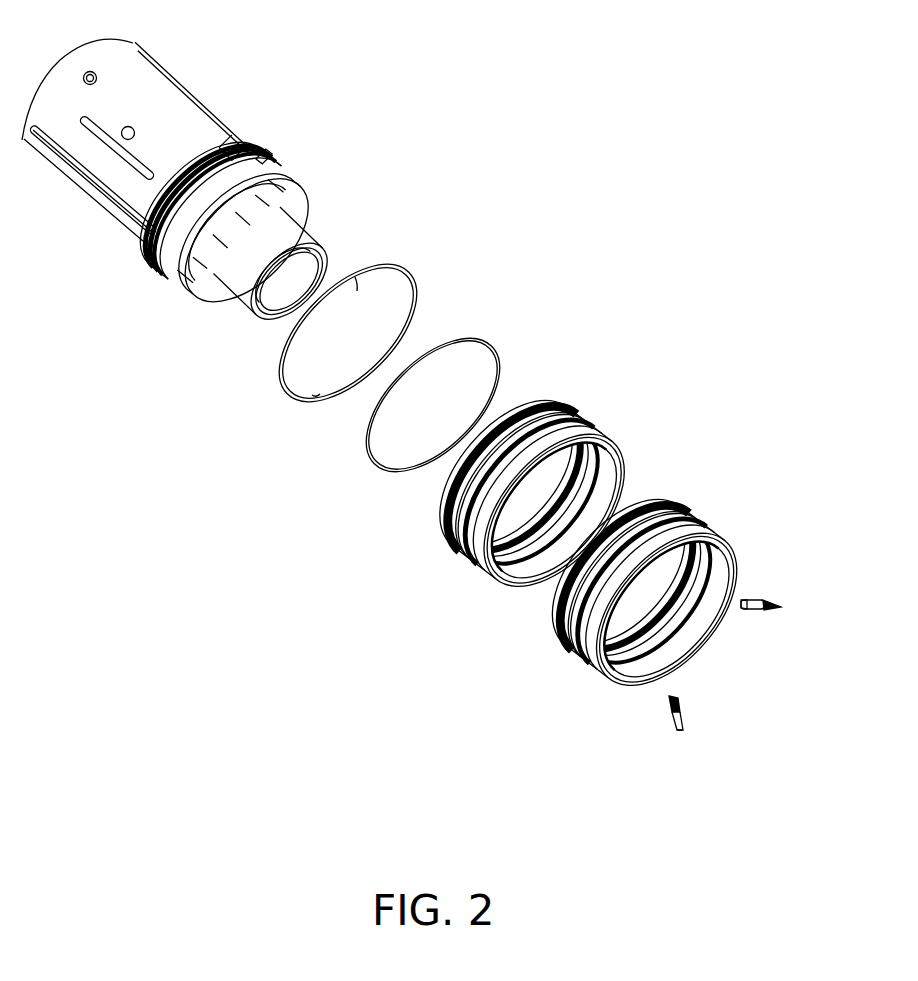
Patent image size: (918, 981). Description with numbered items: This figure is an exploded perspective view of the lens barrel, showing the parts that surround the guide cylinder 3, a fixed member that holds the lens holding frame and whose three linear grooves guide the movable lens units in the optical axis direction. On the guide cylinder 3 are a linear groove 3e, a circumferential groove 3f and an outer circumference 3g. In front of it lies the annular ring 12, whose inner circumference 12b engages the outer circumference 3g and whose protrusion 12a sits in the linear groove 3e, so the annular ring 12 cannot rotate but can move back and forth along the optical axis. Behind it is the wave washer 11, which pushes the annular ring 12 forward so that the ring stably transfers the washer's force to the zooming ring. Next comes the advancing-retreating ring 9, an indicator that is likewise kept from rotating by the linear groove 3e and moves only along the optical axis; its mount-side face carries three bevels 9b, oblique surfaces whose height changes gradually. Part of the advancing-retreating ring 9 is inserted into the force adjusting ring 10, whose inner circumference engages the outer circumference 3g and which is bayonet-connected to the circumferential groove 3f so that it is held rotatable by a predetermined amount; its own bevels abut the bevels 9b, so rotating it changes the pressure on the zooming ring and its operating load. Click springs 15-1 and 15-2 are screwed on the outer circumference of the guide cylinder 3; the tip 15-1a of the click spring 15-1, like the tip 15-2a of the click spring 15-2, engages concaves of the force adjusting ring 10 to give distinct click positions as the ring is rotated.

The guide cylinder 3 is at (137, 87).
The linear groove 3e is at (231, 147).
The circumferential groove 3f is at (268, 140).
The outer circumference 3g is at (160, 238).
The annular ring 12 is at (405, 262).
The protrusion 12a is at (357, 290).
The inner circumference 12b is at (320, 394).
The wave washer 11 is at (480, 337).
The advancing-retreating ring 9 is at (552, 396).
The bevels 9b is at (602, 448).
The force adjusting ring 10 is at (673, 498).
The click spring 15-1 is at (748, 597).
The tip of the click spring 15-1a is at (746, 600).
The click spring 15-2 is at (682, 702).
The tab of second clip 15-2a is at (679, 731).